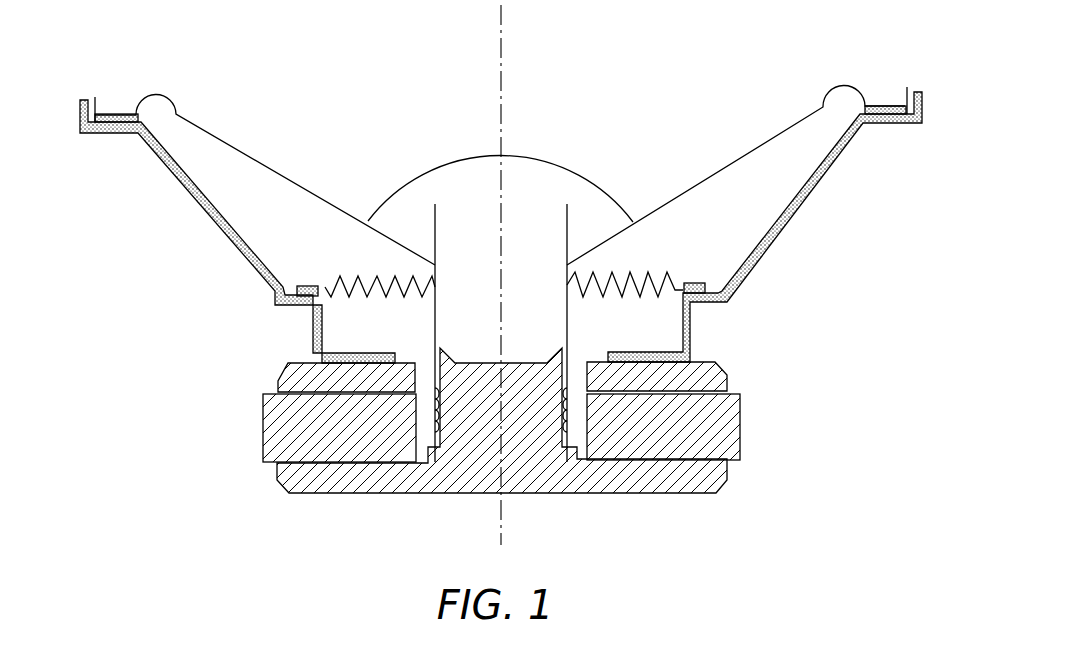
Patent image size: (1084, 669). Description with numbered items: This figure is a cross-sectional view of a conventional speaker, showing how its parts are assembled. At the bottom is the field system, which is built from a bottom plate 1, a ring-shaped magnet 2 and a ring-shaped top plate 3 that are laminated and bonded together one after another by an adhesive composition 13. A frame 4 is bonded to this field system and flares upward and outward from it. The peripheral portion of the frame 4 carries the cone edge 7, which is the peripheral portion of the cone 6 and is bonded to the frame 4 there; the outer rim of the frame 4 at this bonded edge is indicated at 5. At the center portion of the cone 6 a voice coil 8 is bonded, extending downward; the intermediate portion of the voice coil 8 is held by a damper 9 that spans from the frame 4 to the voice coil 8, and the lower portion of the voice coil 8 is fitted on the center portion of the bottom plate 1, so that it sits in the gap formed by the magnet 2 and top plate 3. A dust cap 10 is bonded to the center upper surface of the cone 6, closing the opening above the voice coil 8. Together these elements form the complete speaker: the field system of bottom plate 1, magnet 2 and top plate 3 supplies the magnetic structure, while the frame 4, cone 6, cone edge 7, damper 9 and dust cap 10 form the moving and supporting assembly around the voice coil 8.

The bottom plate 1 is at (722, 488).
The ring-shaped magnet 2 is at (742, 432).
The ring-shaped top plate 3 is at (728, 378).
The frame 4 is at (501, 198).
The frame flange 5 is at (882, 130).
The cone 6 is at (742, 158).
The cone edge 7 is at (893, 102).
The voice coil 8 is at (435, 220).
The damper 9 is at (619, 293).
The dust cap 10 is at (529, 155).
The adhesive composition 13 is at (118, 113).